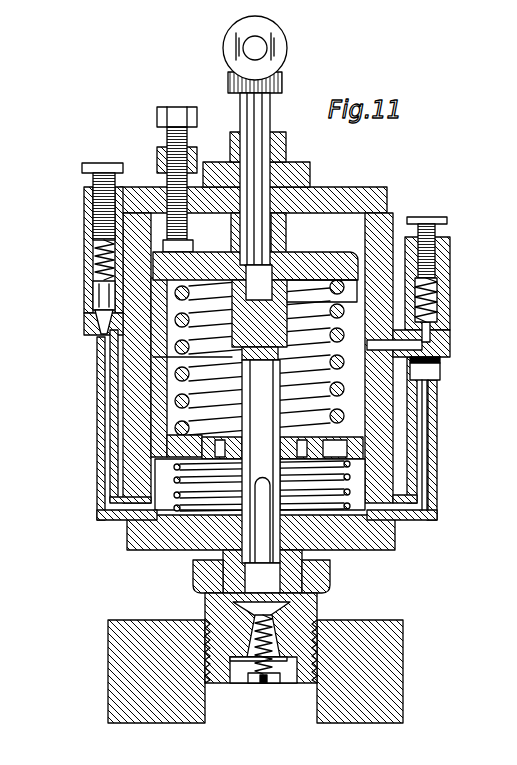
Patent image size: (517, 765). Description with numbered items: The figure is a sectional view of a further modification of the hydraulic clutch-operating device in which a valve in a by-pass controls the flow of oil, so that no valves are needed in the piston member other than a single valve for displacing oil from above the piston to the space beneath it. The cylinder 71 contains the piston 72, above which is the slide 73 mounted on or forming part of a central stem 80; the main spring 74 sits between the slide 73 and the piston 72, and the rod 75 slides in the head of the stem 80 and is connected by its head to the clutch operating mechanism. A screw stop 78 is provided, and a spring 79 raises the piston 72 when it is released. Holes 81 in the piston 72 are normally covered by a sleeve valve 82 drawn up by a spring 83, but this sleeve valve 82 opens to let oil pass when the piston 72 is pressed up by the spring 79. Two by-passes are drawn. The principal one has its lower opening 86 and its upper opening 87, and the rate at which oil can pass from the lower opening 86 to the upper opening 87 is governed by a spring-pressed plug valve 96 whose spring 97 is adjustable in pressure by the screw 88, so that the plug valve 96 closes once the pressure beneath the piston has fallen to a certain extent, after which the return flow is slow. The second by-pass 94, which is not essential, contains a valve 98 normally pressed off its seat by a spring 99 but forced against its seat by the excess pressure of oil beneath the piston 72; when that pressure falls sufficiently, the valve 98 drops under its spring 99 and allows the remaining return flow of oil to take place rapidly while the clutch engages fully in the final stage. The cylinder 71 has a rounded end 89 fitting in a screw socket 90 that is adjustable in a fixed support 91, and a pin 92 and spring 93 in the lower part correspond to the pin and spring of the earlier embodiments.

The cylinder 71 is at (140, 465).
The piston 72 is at (165, 373).
The slide 73 is at (303, 262).
The main spring 74 is at (445, 245).
The rod 75 is at (248, 107).
The screw stop 78 is at (172, 133).
The spring 79 is at (177, 483).
The central stem 80 is at (355, 292).
The holes 81 is at (223, 445).
The sleeve valve 82 is at (212, 467).
The spring 83 is at (190, 408).
The lower opening 86 is at (110, 520).
The upper opening 87 is at (102, 340).
The screw 88 is at (88, 192).
The rounded end 89 is at (273, 610).
The screw socket 90 is at (297, 632).
The fixed support 91 is at (180, 650).
The pin 92 is at (270, 673).
The spring 93 is at (252, 660).
The second by-pass 94 is at (428, 412).
The plug valve 96 is at (98, 323).
The spring 97 is at (98, 250).
The valve 98 is at (443, 343).
The spring 99 is at (437, 288).